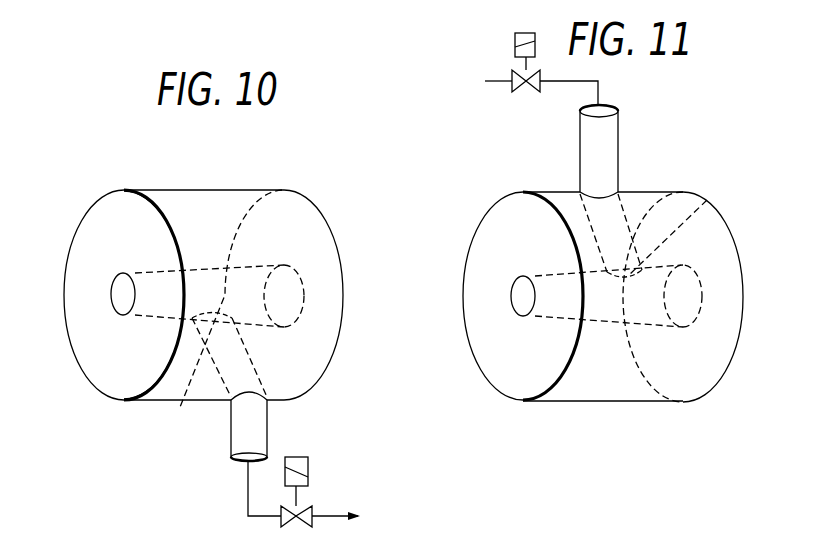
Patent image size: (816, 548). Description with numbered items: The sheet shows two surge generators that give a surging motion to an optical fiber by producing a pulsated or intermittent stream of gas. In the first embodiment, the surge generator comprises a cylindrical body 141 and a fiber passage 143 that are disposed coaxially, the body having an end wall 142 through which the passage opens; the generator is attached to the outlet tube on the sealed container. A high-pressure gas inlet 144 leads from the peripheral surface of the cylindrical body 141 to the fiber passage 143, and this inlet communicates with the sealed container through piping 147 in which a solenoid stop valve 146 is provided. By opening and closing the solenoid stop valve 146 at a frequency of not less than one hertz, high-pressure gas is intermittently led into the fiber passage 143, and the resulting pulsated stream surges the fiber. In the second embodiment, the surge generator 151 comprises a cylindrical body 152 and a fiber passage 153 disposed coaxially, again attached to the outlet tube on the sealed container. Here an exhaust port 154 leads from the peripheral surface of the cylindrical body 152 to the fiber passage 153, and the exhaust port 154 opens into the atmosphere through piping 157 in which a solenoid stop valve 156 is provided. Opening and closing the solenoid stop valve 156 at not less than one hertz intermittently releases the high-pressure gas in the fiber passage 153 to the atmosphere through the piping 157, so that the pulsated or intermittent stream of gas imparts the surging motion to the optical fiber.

In FIG. 10, the cylindrical body 141 is at (263, 185).
In FIG. 10, the end wall of valve body 142 is at (190, 190).
In FIG. 10, the fiber passage 143 is at (121, 296).
In FIG. 10, the high-pressure gas inlet 144 is at (217, 387).
In FIG. 10, the solenoid stop valve 146 is at (309, 480).
In FIG. 10, the piping 147 is at (321, 514).
In FIG. 11, the surge generator 151 is at (679, 183).
In FIG. 11, the cylindrical body 152 is at (640, 200).
In FIG. 11, the fiber passage 153 is at (519, 296).
In FIG. 11, the exhaust port 154 is at (643, 264).
In FIG. 11, the solenoid stop valve 156 is at (515, 44).
In FIG. 11, the piping 157 is at (565, 83).